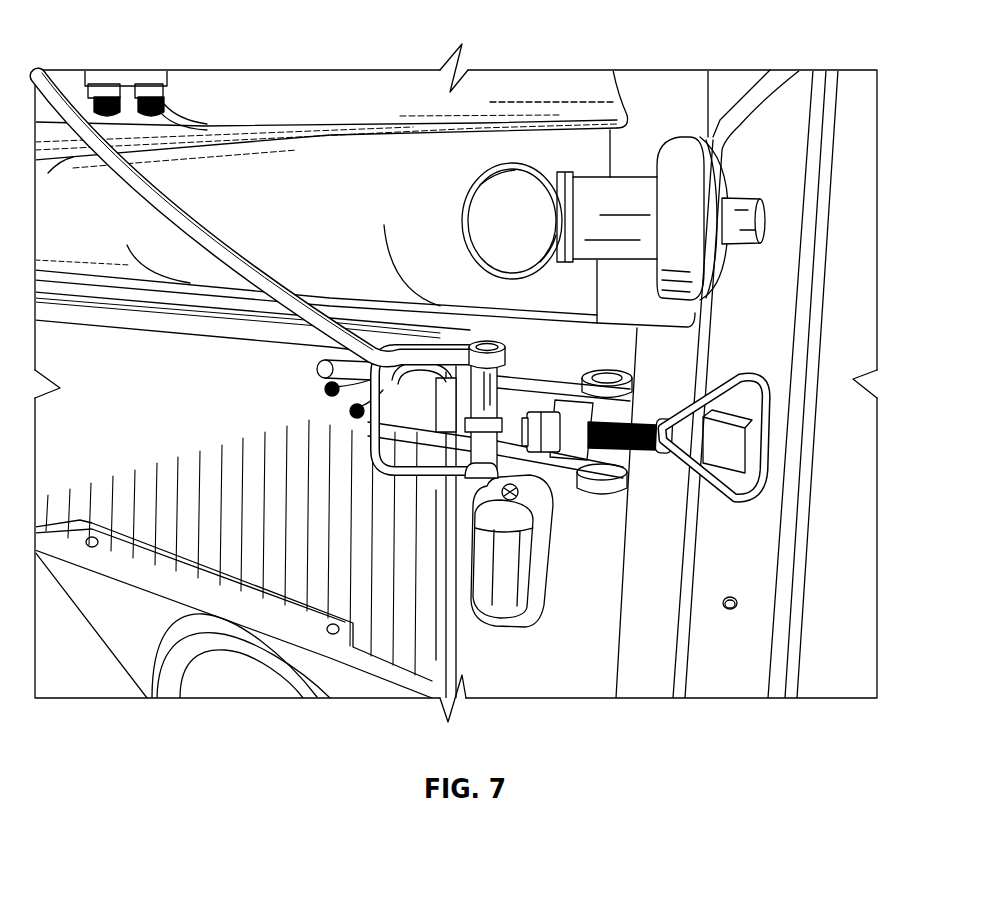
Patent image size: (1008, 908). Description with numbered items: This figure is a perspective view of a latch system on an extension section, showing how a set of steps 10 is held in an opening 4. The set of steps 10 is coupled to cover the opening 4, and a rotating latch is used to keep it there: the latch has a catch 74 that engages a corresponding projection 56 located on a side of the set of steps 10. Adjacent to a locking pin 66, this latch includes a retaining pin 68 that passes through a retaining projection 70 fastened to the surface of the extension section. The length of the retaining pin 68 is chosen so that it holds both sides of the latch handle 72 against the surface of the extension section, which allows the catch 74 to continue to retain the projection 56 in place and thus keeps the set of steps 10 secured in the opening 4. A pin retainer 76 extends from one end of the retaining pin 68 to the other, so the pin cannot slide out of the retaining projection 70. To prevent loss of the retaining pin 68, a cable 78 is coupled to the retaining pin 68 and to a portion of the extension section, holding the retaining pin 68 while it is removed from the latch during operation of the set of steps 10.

The opening 4 is at (820, 278).
The set of steps 10 is at (715, 660).
The projection 56 is at (743, 460).
The locking pin 66 is at (742, 197).
The retaining pin 68 is at (441, 487).
The retaining projection 70 is at (510, 374).
The latch handle 72 is at (393, 480).
The catch 74 is at (703, 480).
The pin retainer 76 is at (370, 452).
The cable 78 is at (247, 270).